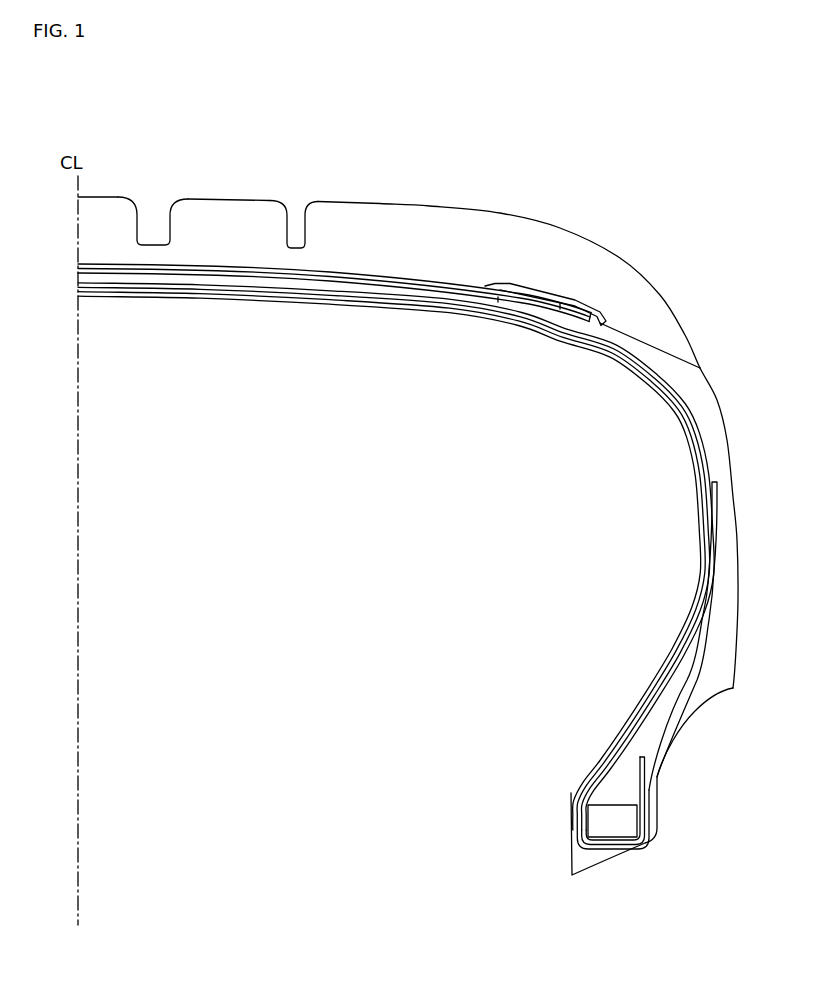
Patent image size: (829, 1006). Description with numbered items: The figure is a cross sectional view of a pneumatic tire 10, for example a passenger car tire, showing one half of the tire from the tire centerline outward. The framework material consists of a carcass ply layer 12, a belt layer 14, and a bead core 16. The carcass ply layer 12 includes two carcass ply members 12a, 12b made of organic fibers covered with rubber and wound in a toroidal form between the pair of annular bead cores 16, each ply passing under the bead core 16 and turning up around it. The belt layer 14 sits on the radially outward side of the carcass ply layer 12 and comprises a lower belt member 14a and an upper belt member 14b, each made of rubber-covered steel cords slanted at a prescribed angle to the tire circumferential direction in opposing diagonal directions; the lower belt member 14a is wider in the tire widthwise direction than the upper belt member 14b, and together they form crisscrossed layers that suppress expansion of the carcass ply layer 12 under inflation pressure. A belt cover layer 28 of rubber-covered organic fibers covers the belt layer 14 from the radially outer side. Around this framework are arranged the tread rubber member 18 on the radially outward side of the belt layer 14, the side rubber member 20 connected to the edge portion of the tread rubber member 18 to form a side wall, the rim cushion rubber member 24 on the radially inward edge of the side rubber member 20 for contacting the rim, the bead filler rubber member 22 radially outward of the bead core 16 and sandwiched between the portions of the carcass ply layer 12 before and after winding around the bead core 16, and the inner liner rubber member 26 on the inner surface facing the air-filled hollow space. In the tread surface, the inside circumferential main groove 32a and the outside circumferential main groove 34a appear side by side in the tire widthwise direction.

The pneumatic tire 10 is at (645, 250).
The carcass ply layer 12 is at (620, 435).
The carcass ply member 12a is at (563, 333).
The carcass ply member 12b is at (613, 353).
The belt layer 14 is at (520, 382).
The lower belt member 14a is at (459, 298).
The upper belt member 14b is at (486, 300).
The bead core 16 is at (617, 820).
The tread rubber member 18 is at (535, 280).
The side rubber member 20 is at (708, 436).
The bead filler rubber member 22 is at (623, 765).
The rim cushion rubber member 24 is at (683, 723).
The inner liner rubber member 26 is at (678, 639).
The belt cover layer 28 is at (453, 281).
The inside circumferential main groove 32a is at (155, 218).
The outside circumferential main groove 34a is at (294, 218).